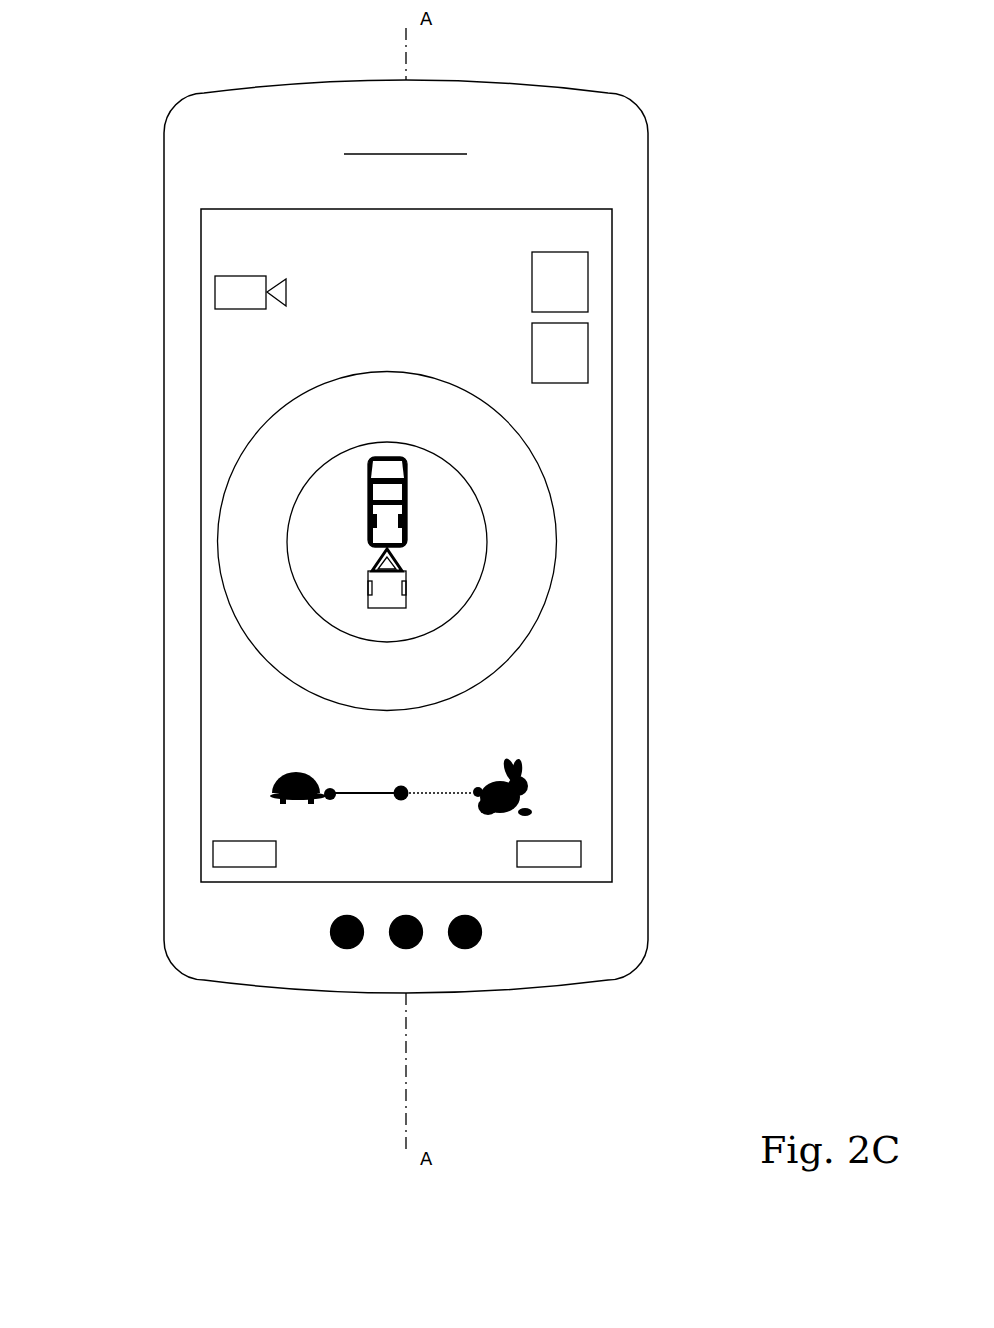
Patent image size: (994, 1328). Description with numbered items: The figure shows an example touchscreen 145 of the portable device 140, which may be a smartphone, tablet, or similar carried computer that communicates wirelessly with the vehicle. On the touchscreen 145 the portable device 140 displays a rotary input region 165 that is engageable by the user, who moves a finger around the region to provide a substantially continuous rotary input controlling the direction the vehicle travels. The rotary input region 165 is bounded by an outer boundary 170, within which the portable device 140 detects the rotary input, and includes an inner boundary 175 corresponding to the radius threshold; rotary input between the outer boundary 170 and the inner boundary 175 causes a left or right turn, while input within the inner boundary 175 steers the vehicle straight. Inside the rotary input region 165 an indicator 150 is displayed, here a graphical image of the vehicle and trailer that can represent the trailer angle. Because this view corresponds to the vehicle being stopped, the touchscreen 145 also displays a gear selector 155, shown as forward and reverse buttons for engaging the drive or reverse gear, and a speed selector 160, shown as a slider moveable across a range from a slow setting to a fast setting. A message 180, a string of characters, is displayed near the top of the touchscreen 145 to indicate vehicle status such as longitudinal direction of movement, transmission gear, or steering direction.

The portable device 140 is at (156, 237).
The touchscreen 145 is at (200, 410).
The indicator 150 is at (407, 432).
The gear selector 155 is at (600, 318).
The speed selector 160 is at (532, 767).
The rotary input region 165 is at (220, 513).
The outer boundary 170 is at (388, 541).
The inner boundary 175 is at (452, 618).
The message 180 is at (493, 235).